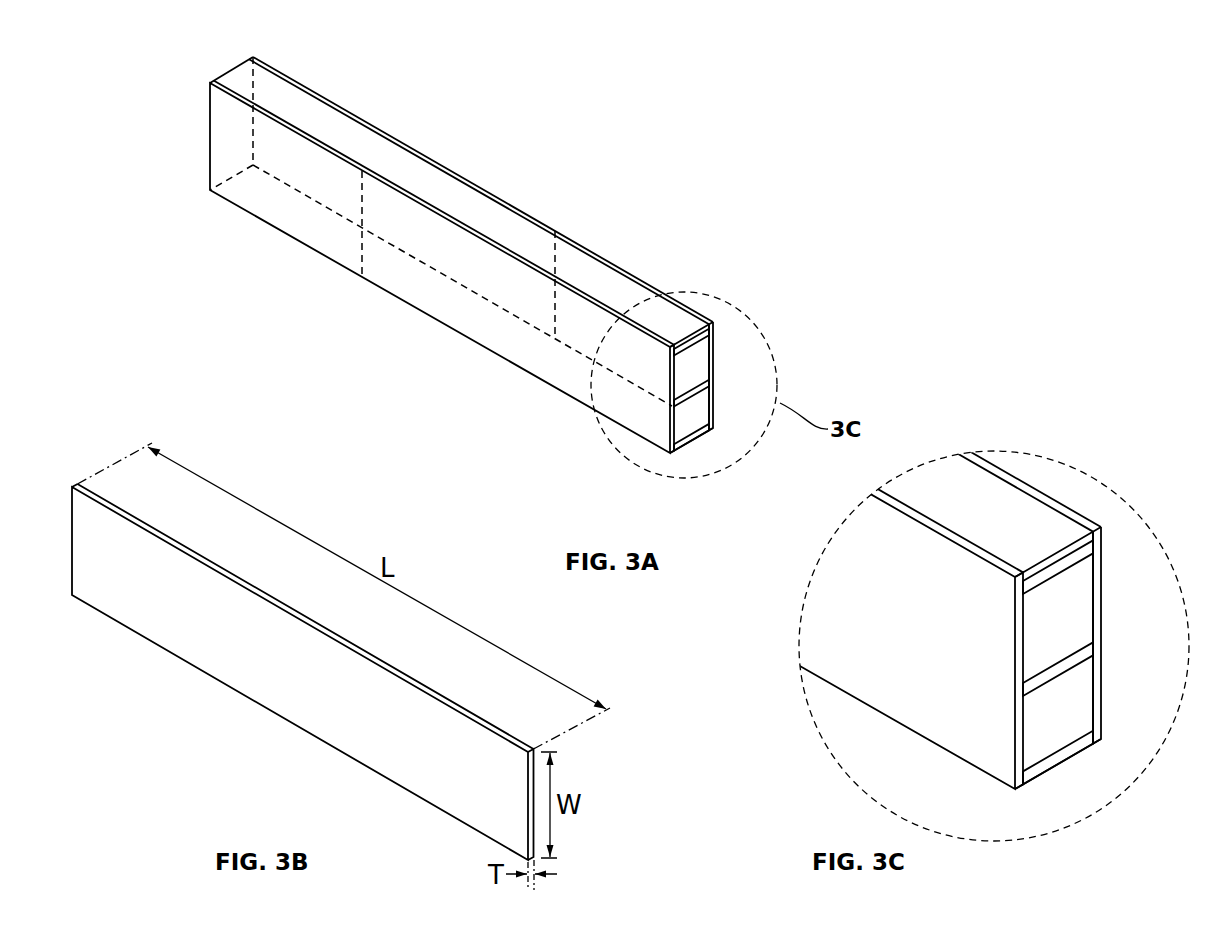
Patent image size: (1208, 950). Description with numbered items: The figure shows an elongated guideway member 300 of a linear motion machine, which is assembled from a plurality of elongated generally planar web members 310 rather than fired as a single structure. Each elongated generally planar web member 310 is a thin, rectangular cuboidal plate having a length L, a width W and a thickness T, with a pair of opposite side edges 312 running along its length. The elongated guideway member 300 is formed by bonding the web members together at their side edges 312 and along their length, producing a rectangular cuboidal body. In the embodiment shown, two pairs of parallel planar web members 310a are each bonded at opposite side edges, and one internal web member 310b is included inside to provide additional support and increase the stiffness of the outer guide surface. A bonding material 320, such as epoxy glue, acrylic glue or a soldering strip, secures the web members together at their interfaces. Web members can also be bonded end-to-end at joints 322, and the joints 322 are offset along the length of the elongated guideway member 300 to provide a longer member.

In FIG. 3A, the elongated guideway member 300 is at (648, 114).
In FIG. 3B, the elongated generally planar web member 310 is at (150, 410).
In FIG. 3A, the parallel planar web member 310a is at (605, 287).
In FIG. 3B, the parallel planar web member 310a is at (218, 657).
In FIG. 3C, the parallel planar web member 310a is at (1005, 497).
In FIG. 3A, the internal elongated generally planar web member 310b is at (692, 407).
In FIG. 3C, the internal elongated generally planar web member 310b is at (1097, 637).
In FIG. 3B, the side edge 312 is at (288, 610).
In FIG. 3A, the bonding material 320 is at (682, 305).
In FIG. 3C, the bonding material 320 is at (1068, 508).
In FIG. 3A, the joint 322 is at (362, 265).